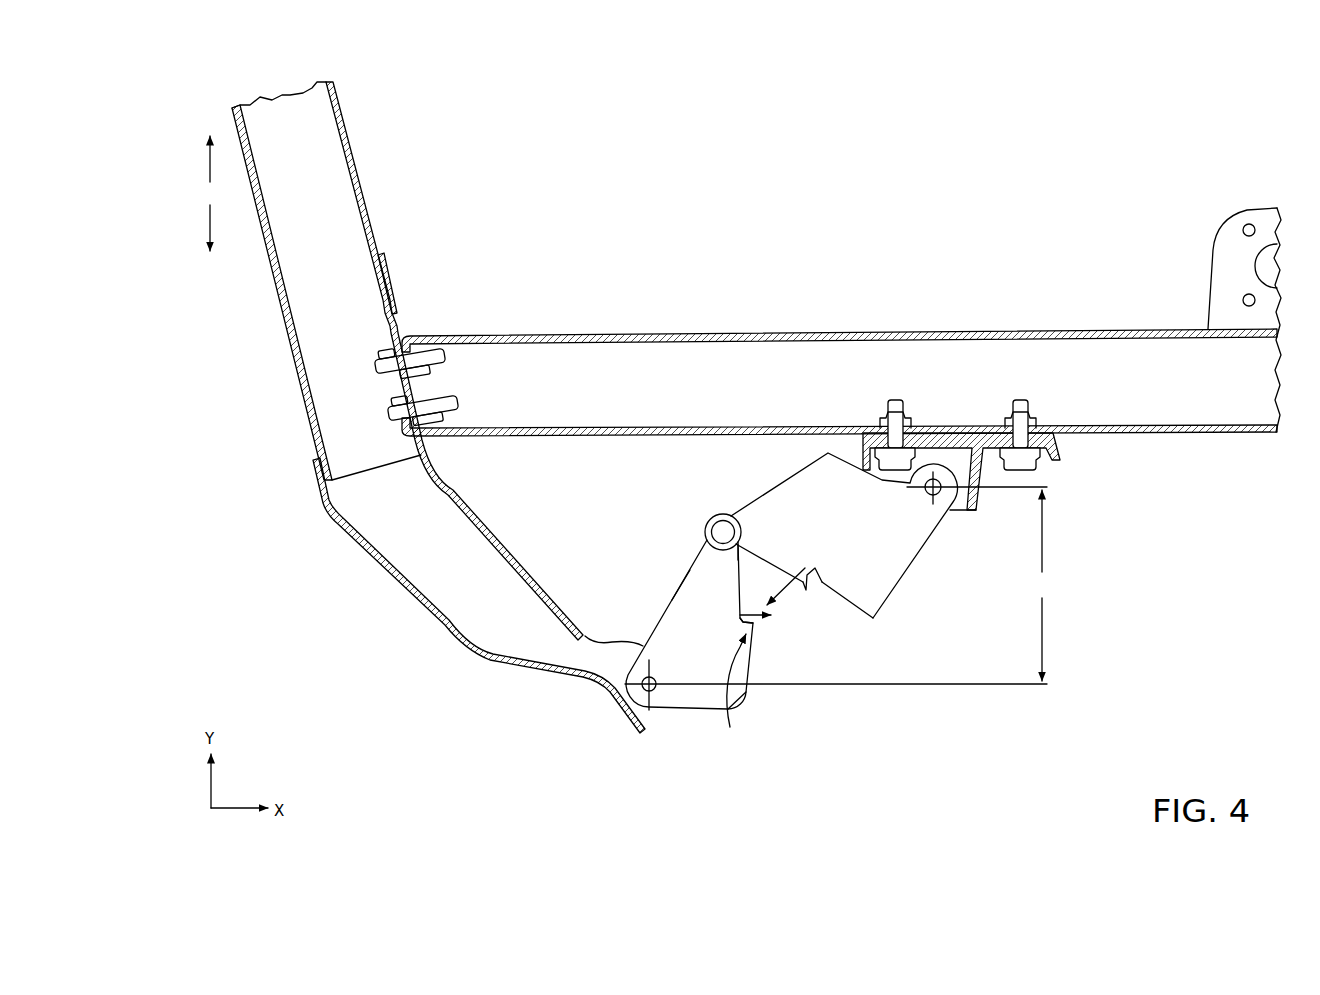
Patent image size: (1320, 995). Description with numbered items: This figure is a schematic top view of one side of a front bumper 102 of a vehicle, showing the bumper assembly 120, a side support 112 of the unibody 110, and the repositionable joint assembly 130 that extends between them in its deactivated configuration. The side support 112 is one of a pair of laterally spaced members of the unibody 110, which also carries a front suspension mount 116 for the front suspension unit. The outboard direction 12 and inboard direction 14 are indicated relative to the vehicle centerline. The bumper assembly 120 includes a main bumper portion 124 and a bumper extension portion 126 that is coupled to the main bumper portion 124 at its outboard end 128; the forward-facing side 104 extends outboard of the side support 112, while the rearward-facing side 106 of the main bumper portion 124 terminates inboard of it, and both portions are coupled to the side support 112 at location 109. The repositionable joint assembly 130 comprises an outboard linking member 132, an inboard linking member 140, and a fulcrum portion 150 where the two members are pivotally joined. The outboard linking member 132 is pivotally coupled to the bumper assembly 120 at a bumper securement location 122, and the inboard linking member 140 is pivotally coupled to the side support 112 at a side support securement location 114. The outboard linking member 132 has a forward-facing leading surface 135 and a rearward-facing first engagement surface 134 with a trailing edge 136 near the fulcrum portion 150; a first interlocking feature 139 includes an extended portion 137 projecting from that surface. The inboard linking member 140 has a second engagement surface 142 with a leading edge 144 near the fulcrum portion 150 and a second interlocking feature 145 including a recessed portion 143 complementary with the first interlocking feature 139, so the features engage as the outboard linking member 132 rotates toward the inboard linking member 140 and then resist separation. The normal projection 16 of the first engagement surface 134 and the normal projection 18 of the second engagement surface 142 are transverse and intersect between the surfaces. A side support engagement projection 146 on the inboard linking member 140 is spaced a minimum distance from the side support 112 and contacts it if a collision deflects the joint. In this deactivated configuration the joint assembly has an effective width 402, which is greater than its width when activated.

The outboard direction 12 is at (210, 222).
The inboard direction 14 is at (210, 162).
The normal projection of the first engagement surface 16 is at (742, 612).
The normal projection of the second engagement surface 18 is at (806, 568).
The front bumper 102 is at (216, 326).
The forward-facing side 104 is at (304, 405).
The rearward-facing side 106 is at (345, 112).
The location 109 is at (430, 340).
The unibody 110 is at (1112, 224).
The side support 112 is at (1009, 316).
The side support securement location 114 is at (925, 489).
The front suspension mount 116 is at (1235, 220).
The bumper assembly 120 is at (409, 171).
The bumper securement location 122 is at (655, 679).
The main bumper portion 124 is at (372, 233).
The bumper extension portion 126 is at (407, 603).
The outboard end 128 is at (291, 494).
The repositionable joint assembly 130 is at (845, 644).
The outboard linking member 132 is at (696, 737).
The first engagement surface 134 is at (747, 684).
The leading surface 135 is at (673, 590).
The trailing edge 136 is at (728, 553).
The extended portion 137 is at (753, 640).
The first interlocking feature 139 is at (733, 693).
The inboard linking member 140 is at (920, 596).
The second engagement surface 142 is at (865, 614).
The recessed portion 143 is at (803, 582).
The leading edge 144 is at (747, 543).
The second interlocking feature 145 is at (829, 570).
The side support engagement projection 146 is at (828, 453).
The fulcrum portion 150 is at (708, 524).
The effective width 402 is at (840, 585).